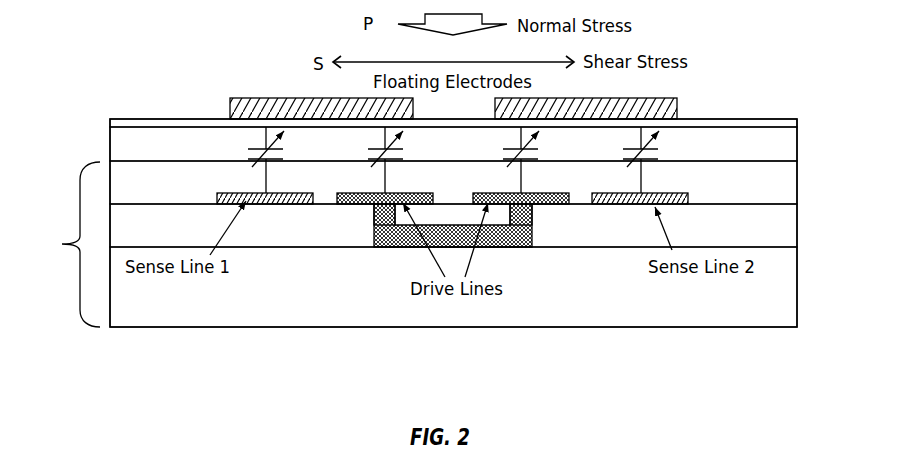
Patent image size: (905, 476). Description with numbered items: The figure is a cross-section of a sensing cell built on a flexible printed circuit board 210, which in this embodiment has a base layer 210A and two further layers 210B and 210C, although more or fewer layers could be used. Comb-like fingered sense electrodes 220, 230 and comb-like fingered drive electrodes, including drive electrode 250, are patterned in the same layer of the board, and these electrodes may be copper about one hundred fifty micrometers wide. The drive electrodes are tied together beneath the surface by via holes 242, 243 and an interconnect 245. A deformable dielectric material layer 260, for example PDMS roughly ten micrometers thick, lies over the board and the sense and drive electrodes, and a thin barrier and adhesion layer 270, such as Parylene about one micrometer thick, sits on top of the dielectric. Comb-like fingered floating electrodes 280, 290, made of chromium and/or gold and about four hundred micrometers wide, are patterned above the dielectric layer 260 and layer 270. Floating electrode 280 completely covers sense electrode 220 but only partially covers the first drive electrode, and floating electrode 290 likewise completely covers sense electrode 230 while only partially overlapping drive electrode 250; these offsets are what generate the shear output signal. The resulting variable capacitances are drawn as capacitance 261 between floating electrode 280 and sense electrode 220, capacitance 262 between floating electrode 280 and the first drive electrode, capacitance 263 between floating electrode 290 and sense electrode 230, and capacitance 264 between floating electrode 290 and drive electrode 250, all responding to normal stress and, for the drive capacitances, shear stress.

The flexible printed circuit board 210 is at (62, 244).
The base layer 210A is at (453, 287).
The layer 210B is at (453, 225).
The layer 210C is at (453, 182).
The comb-like fingered sense electrode 220 is at (253, 205).
The comb-like fingered sense electrode 230 is at (688, 198).
The via hole 242 is at (403, 226).
The via hole 243 is at (533, 215).
The interconnect 245 is at (515, 243).
The comb-like fingered drive electrode 250 is at (553, 200).
The deformable dielectric material layer 260 is at (798, 145).
The capacitance 261 is at (284, 152).
The capacitance 262 is at (403, 154).
The capacitance 263 is at (538, 154).
The capacitance 264 is at (658, 153).
The barrier and adhesion layer 270 is at (797, 120).
The comb-like fingered floating electrode 280 is at (258, 98).
The comb-like fingered floating electrode 290 is at (668, 98).